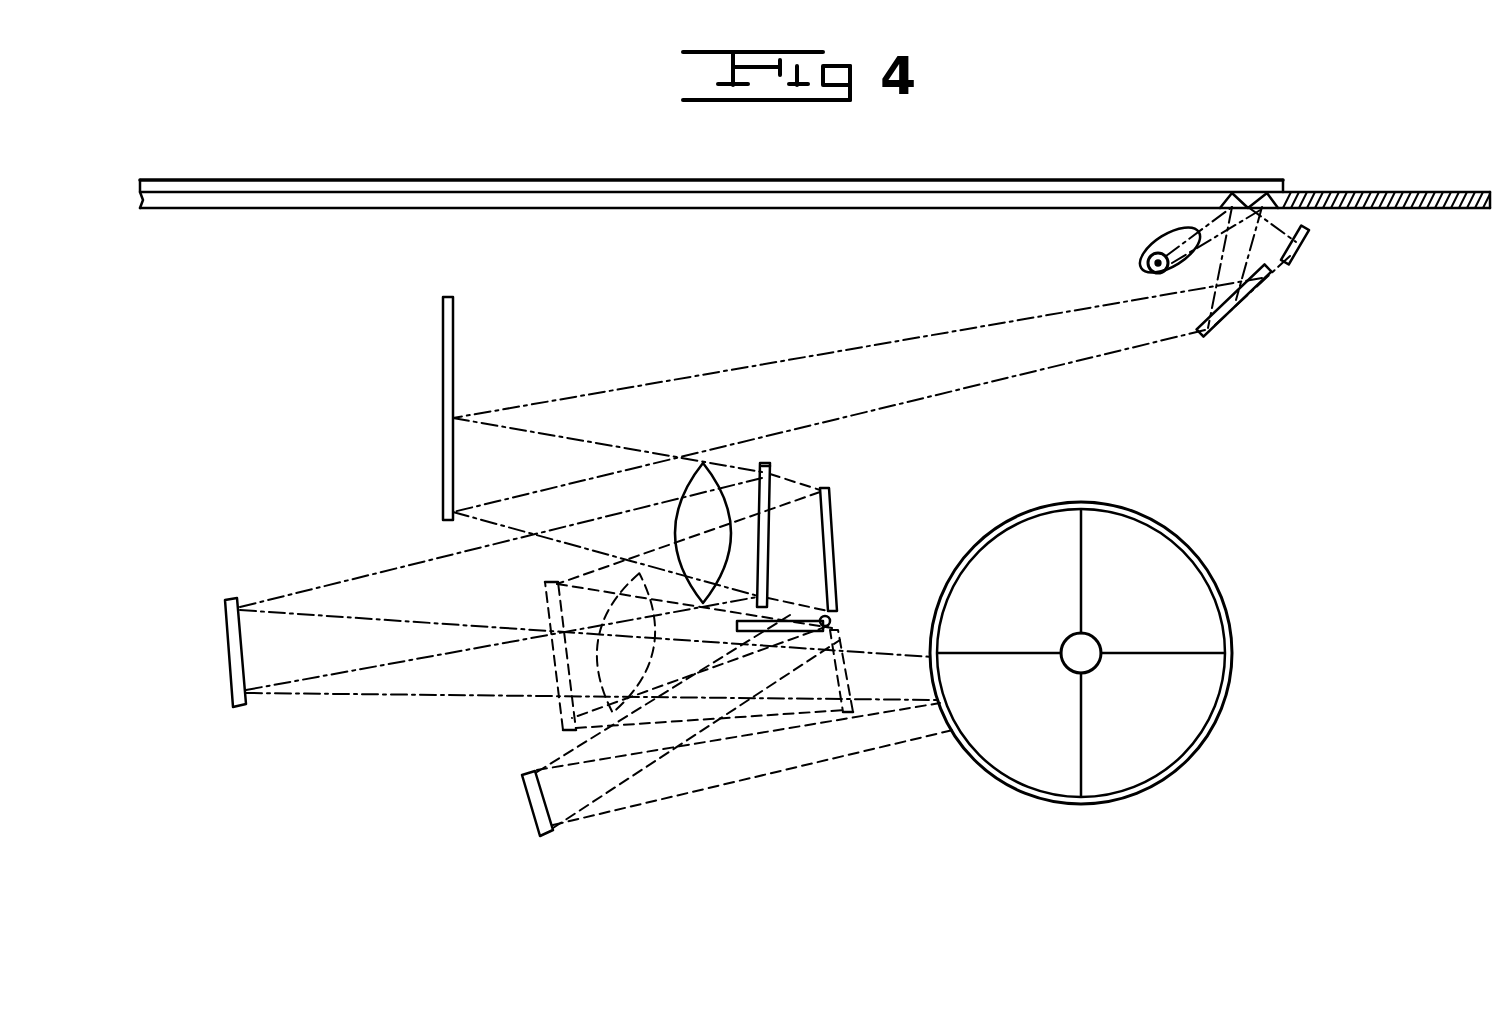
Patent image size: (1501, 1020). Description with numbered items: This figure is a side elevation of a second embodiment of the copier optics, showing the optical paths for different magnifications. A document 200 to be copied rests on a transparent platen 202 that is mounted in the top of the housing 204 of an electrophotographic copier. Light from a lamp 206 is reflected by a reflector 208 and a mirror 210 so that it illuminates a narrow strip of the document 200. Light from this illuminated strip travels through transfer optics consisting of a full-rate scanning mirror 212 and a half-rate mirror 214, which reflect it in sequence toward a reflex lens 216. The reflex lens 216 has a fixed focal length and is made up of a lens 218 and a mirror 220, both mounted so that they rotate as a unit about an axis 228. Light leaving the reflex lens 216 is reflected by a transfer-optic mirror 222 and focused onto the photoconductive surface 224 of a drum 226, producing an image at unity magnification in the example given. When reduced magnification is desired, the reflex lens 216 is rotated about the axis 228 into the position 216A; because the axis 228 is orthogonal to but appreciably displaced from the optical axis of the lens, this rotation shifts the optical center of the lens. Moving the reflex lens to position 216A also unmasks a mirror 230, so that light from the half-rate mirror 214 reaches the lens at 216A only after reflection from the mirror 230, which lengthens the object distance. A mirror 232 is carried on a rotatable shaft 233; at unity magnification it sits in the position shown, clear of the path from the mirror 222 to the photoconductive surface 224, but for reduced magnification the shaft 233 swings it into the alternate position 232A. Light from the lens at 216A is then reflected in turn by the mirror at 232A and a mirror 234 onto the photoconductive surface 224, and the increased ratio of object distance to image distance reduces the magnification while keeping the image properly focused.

The document 200 is at (1178, 178).
The transparent platen 202 is at (1040, 186).
The housing 204 is at (1403, 186).
The lamp 206 is at (1148, 262).
The reflector 208 is at (1190, 222).
The mirror 210 is at (1312, 240).
The full-rate scanning mirror 212 is at (1262, 290).
The half-rate mirror 214 is at (455, 338).
The reflex lens 216 is at (748, 458).
The reflex lens position 216A is at (548, 718).
The lens 218 is at (703, 462).
The mirror 220 is at (775, 470).
The mirror 222 is at (230, 663).
The photoconductive surface 224 is at (1012, 783).
The drum 226 is at (1226, 545).
The axis 228 is at (656, 578).
The mirror 230 is at (833, 520).
The mirror 232 is at (793, 634).
The mirror position 232A is at (858, 668).
The rotatable shaft 233 is at (832, 618).
The mirror 234 is at (530, 823).